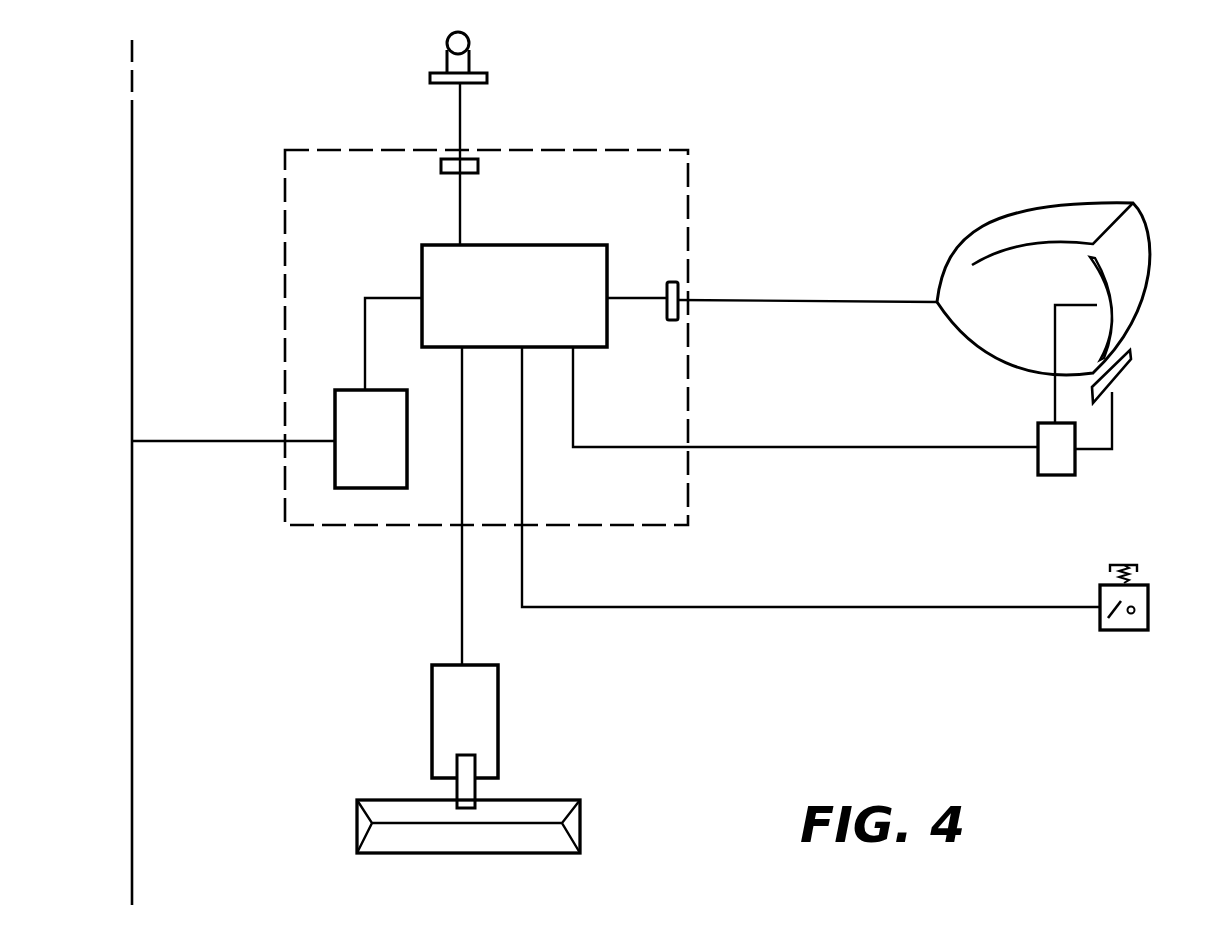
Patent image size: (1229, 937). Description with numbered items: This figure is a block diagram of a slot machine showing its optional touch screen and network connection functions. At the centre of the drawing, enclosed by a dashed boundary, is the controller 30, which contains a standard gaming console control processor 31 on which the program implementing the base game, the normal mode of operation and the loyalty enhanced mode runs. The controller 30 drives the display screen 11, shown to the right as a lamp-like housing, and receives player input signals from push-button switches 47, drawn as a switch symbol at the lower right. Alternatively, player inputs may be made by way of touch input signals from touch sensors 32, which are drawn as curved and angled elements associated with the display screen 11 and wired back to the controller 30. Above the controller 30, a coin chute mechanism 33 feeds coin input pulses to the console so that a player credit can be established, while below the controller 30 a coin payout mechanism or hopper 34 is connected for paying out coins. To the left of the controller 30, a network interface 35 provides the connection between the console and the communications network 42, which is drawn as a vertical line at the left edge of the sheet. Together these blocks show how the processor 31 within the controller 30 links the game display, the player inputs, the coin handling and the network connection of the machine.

The display screen 11 is at (1133, 235).
The controller 30 is at (680, 150).
The gaming console control processor 31 is at (551, 245).
The touch sensors 32 is at (1093, 277).
The coin chute mechanism 33 is at (467, 45).
The coin payout mechanism or hopper 34 is at (498, 700).
The network interface 35 is at (355, 490).
The communications network 42 is at (134, 302).
The push-button switches 47 is at (1124, 563).